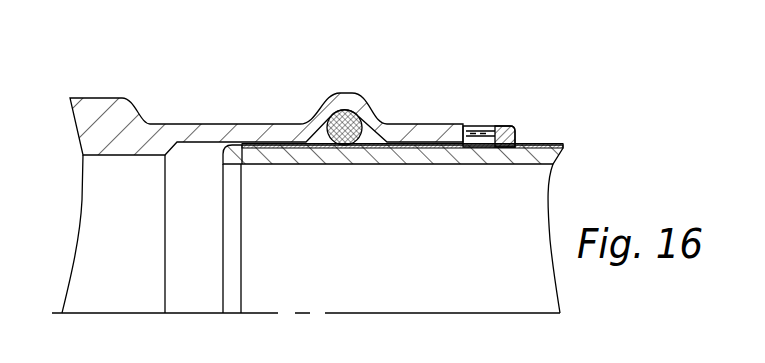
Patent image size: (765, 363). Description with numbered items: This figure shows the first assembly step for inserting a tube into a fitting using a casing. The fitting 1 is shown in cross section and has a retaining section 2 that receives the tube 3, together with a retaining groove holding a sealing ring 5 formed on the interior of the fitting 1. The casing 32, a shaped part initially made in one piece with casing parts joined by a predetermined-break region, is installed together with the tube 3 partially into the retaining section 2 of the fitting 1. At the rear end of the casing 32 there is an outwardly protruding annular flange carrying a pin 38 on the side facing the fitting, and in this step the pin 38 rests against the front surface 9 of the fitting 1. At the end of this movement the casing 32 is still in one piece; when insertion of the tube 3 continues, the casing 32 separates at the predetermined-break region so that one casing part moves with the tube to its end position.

The fitting 1 is at (343, 165).
The retaining section 2 is at (185, 166).
The tube 3 is at (428, 208).
The sealing ring 5 is at (338, 120).
The front surface 9 is at (438, 124).
The casing 32 is at (412, 165).
The pin 38 is at (478, 130).